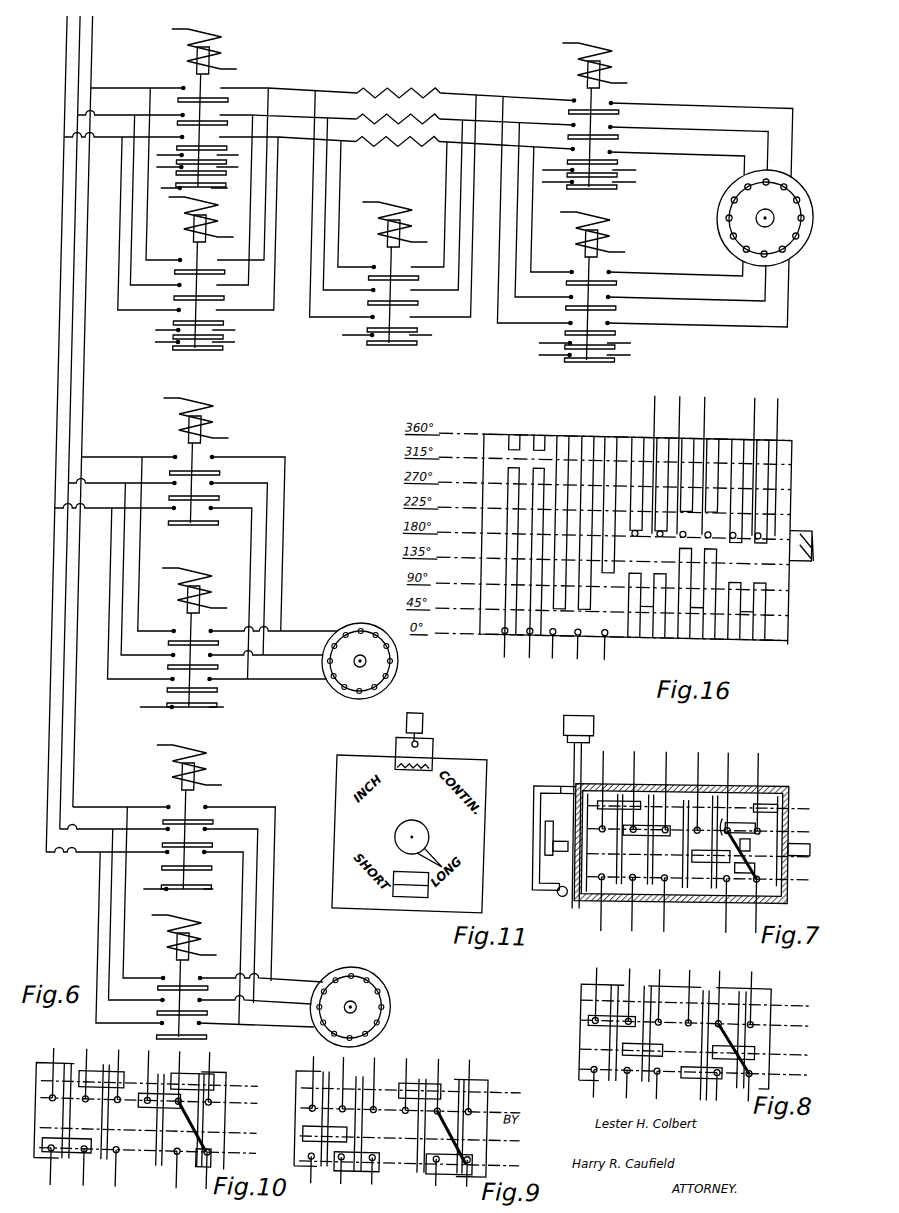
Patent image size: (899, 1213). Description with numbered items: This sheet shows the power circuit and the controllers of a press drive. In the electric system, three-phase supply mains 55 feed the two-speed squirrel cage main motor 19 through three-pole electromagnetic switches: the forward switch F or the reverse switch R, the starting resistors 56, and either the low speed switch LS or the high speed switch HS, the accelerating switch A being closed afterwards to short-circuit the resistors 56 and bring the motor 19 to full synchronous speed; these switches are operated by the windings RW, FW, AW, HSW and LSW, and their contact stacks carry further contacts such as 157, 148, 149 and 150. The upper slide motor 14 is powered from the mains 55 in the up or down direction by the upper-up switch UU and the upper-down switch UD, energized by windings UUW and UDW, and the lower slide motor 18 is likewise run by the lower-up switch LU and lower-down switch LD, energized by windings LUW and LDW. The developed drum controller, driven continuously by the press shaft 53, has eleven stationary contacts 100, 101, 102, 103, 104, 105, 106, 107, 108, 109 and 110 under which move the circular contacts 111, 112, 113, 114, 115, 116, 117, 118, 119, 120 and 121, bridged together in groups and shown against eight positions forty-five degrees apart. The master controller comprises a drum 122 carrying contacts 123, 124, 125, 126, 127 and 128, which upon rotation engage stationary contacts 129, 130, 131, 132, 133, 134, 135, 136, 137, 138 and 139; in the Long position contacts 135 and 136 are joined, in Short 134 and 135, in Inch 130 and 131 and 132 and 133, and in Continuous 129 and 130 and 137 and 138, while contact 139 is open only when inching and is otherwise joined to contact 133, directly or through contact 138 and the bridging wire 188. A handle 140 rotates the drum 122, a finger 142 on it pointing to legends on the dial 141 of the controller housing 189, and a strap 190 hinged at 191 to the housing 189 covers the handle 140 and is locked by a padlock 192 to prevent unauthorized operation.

In FIG. 6, the three-phase supply mains 55 is at (50, 56).
In FIG. 6, the starting resistors 56 is at (436, 134).
In FIG. 6, the relay R contact 157 is at (206, 191).
In FIG. 6, the relay A contact 148 is at (408, 346).
In FIG. 6, the main motor 19 is at (709, 206).
In FIG. 6, the upper slide motor 14 is at (361, 626).
In FIG. 6, the lower slide motor 18 is at (353, 976).
In FIG. 6, the relay UD contact 149 is at (208, 709).
In FIG. 6, the relay LU contact 150 is at (198, 889).
In FIG. 6, the reverse switch R is at (185, 85).
In FIG. 6, the winding of switch R RW is at (206, 51).
In FIG. 6, the forward switch F is at (183, 256).
In FIG. 6, the winding of switch F FW is at (206, 213).
In FIG. 6, the accelerating switch A is at (377, 256).
In FIG. 6, the winding of switch A AW is at (400, 217).
In FIG. 6, the high speed switch HS is at (568, 93).
In FIG. 6, the winding of switch HS HSW is at (598, 64).
In FIG. 6, the low speed switch LS is at (568, 266).
In FIG. 6, the winding of switch LS LSW is at (598, 222).
In FIG. 6, the upper-up switch UU is at (172, 447).
In FIG. 6, the winding of switch UU UUW is at (208, 410).
In FIG. 6, the upper-down switch UD is at (178, 626).
In FIG. 6, the winding of switch UD UDW is at (210, 584).
In FIG. 6, the lower-up switch LU is at (172, 804).
In FIG. 6, the winding of switch LU LUW is at (208, 759).
In FIG. 6, the lower-down switch LD is at (176, 971).
In FIG. 6, the winding of switch LD LDW is at (207, 929).
In FIG. 16, the cam shaft 53 is at (793, 468).
In FIG. 16, the stationary contact 100 is at (504, 636).
In FIG. 16, the stationary contact 101 is at (529, 636).
In FIG. 16, the stationary contact 102 is at (552, 636).
In FIG. 16, the stationary contact 103 is at (577, 636).
In FIG. 16, the stationary contact 104 is at (604, 636).
In FIG. 16, the stationary contact 105 is at (632, 541).
In FIG. 16, the stationary contact 106 is at (658, 542).
In FIG. 16, the stationary contact 107 is at (683, 530).
In FIG. 16, the stationary contact 108 is at (708, 530).
In FIG. 16, the stationary contact 109 is at (733, 548).
In FIG. 16, the stationary contact 110 is at (763, 549).
In FIG. 16, the circular contact 111 is at (509, 437).
In FIG. 16, the circular contact 112 is at (539, 437).
In FIG. 16, the circular contact 113 is at (560, 440).
In FIG. 16, the circular contact 114 is at (584, 440).
In FIG. 16, the circular contact 115 is at (608, 440).
In FIG. 16, the circular contact 116 is at (636, 440).
In FIG. 16, the circular contact 117 is at (658, 441).
In FIG. 16, the circular contact 118 is at (684, 441).
In FIG. 16, the circular contact 119 is at (709, 441).
In FIG. 16, the circular contact 120 is at (736, 441).
In FIG. 16, the circular contact 121 is at (760, 441).
In FIG. 7, the drum 122 is at (786, 806).
In FIG. 7, the drum contact 123 is at (740, 822).
In FIG. 7, the drum contact 124 is at (748, 843).
In FIG. 7, the drum contact 125 is at (755, 873).
In FIG. 7, the drum contact 126 is at (705, 864).
In FIG. 7, the drum contact 127 is at (652, 839).
In FIG. 7, the drum contact 128 is at (607, 800).
In FIG. 7, the stationary contact 129 is at (609, 902).
In FIG. 10, the stationary contact 129 is at (57, 1165).
In FIG. 7, the stationary contact 130 is at (642, 902).
In FIG. 10, the stationary contact 130 is at (92, 1166).
In FIG. 9, the stationary contact 130 is at (349, 1171).
In FIG. 7, the stationary contact 131 is at (676, 903).
In FIG. 9, the stationary contact 131 is at (381, 1173).
In FIG. 7, the stationary contact 132 is at (736, 904).
In FIG. 9, the stationary contact 132 is at (433, 1168).
In FIG. 7, the stationary contact 133 is at (767, 904).
In FIG. 8, the stationary contact 133 is at (748, 1076).
In FIG. 10, the stationary contact 133 is at (205, 1155).
In FIG. 9, the stationary contact 133 is at (455, 1173).
In FIG. 7, the stationary contact 134 is at (597, 798).
In FIG. 8, the stationary contact 134 is at (594, 1005).
In FIG. 7, the stationary contact 135 is at (635, 801).
In FIG. 8, the stationary contact 135 is at (629, 1005).
In FIG. 7, the stationary contact 136 is at (666, 829).
In FIG. 7, the stationary contact 137 is at (701, 802).
In FIG. 10, the stationary contact 137 is at (146, 1104).
In FIG. 7, the stationary contact 138 is at (735, 816).
In FIG. 10, the stationary contact 138 is at (178, 1090).
In FIG. 7, the stationary contact 139 is at (767, 793).
In FIG. 8, the stationary contact 139 is at (760, 1011).
In FIG. 10, the stationary contact 139 is at (211, 1090).
In FIG. 9, the stationary contact 139 is at (476, 1098).
In FIG. 11, the handle 140 is at (428, 835).
In FIG. 7, the handle 140 is at (554, 847).
In FIG. 11, the dial 141 is at (484, 889).
In FIG. 7, the dial 141 is at (573, 906).
In FIG. 11, the finger 142 is at (437, 858).
In FIG. 7, the bridging wire 188 is at (737, 856).
In FIG. 7, the controller housing 189 is at (770, 785).
In FIG. 11, the strap 190 is at (430, 756).
In FIG. 7, the strap 190 is at (572, 770).
In FIG. 7, the hinge 191 is at (558, 898).
In FIG. 11, the padlock 192 is at (419, 724).
In FIG. 7, the padlock 192 is at (592, 724).